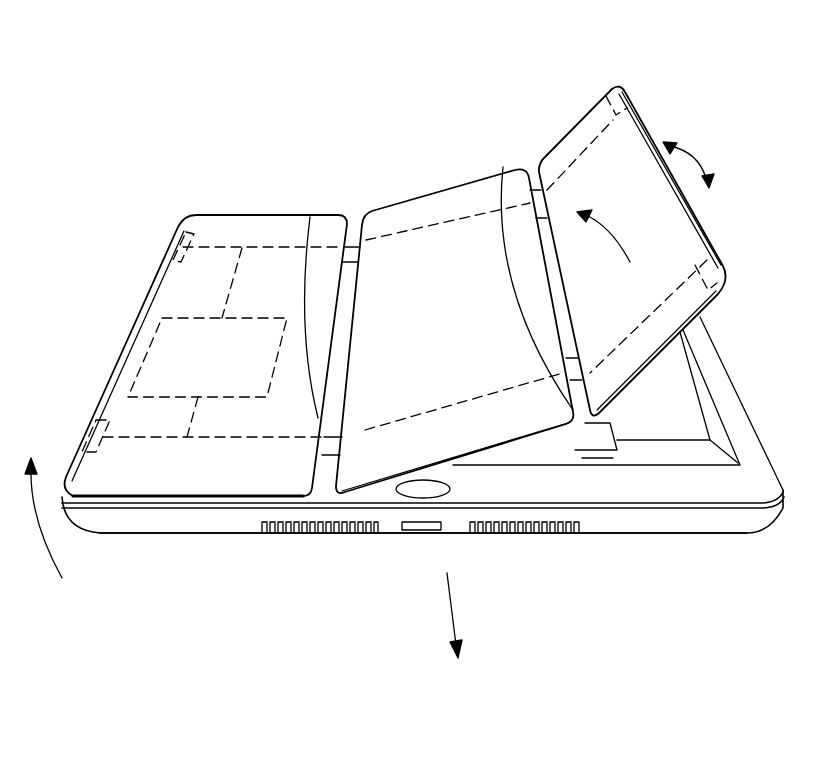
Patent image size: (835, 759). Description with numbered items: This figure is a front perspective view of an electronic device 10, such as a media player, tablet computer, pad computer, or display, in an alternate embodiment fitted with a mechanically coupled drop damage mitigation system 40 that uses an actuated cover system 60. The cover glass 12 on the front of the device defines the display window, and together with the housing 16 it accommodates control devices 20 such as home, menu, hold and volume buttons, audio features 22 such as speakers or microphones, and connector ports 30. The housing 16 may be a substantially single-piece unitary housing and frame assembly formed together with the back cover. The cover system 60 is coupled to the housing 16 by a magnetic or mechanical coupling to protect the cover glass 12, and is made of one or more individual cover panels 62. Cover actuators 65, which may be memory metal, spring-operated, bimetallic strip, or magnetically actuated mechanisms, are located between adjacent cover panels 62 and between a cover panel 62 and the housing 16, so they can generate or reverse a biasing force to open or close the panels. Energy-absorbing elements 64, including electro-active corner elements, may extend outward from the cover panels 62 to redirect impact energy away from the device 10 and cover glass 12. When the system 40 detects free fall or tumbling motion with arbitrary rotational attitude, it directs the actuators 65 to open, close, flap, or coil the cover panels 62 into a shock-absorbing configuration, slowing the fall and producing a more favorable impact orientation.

The electronic device 10 is at (188, 96).
The cover glass 12 is at (686, 403).
The housing 16 is at (148, 520).
The control devices 20 is at (440, 497).
The audio features 22 is at (332, 533).
The connector ports 30 is at (422, 533).
The drop damage mitigation system 40 is at (150, 347).
The cover system 60 is at (344, 149).
The cover panels 62 is at (213, 240).
The energy-absorbing elements 64 is at (613, 85).
The cover actuators 65 is at (173, 242).